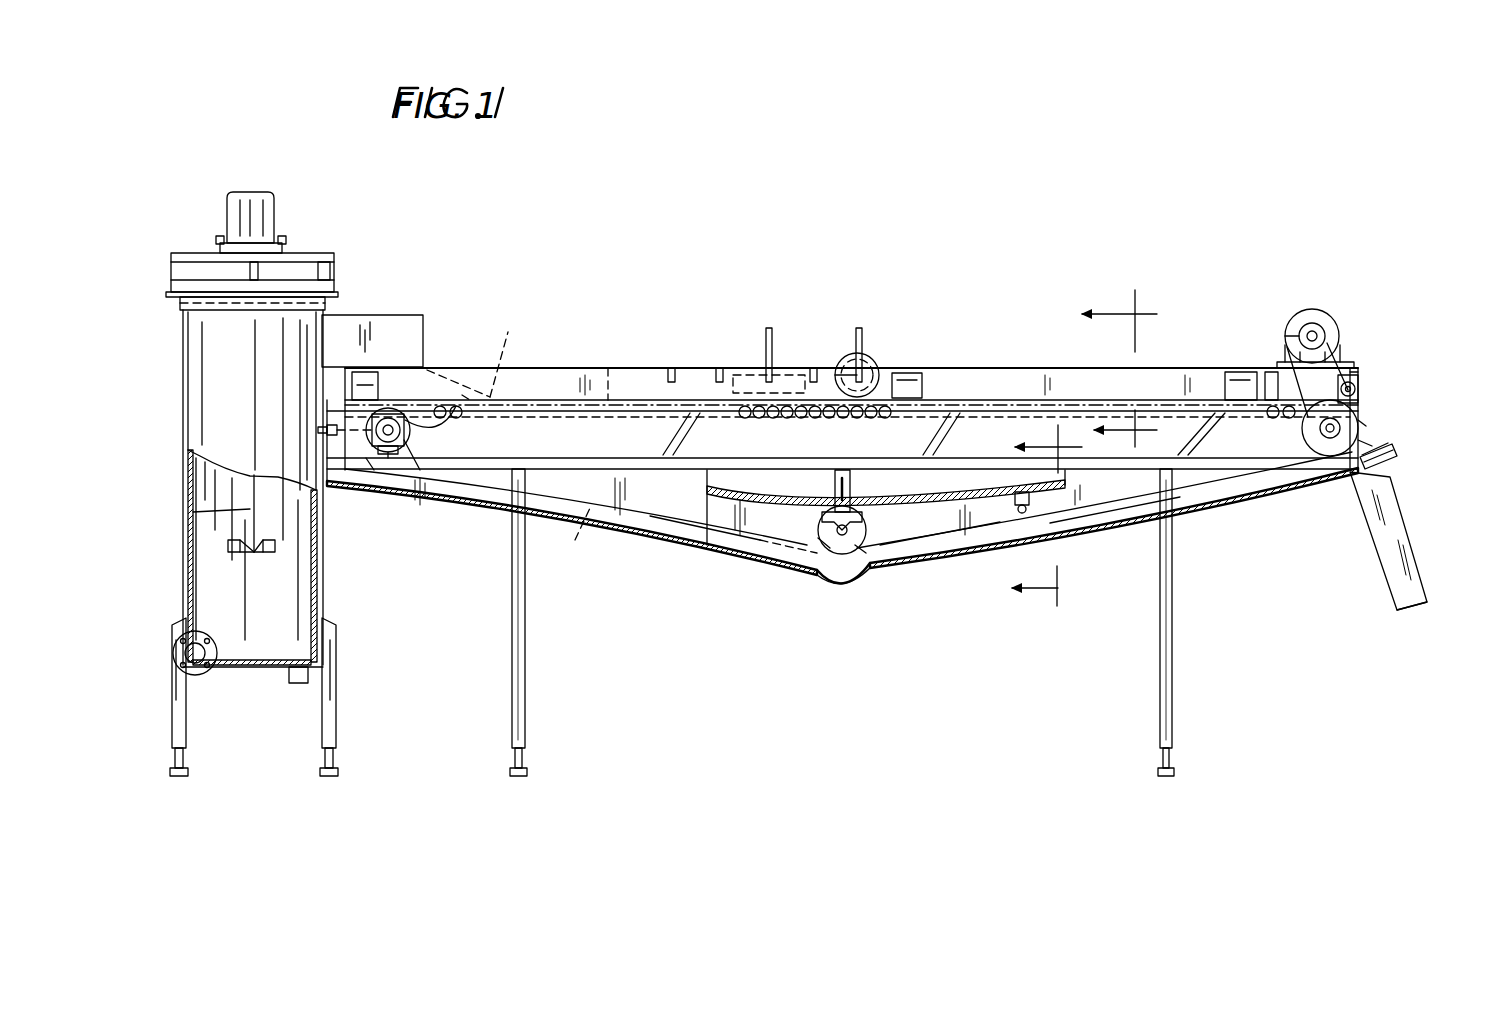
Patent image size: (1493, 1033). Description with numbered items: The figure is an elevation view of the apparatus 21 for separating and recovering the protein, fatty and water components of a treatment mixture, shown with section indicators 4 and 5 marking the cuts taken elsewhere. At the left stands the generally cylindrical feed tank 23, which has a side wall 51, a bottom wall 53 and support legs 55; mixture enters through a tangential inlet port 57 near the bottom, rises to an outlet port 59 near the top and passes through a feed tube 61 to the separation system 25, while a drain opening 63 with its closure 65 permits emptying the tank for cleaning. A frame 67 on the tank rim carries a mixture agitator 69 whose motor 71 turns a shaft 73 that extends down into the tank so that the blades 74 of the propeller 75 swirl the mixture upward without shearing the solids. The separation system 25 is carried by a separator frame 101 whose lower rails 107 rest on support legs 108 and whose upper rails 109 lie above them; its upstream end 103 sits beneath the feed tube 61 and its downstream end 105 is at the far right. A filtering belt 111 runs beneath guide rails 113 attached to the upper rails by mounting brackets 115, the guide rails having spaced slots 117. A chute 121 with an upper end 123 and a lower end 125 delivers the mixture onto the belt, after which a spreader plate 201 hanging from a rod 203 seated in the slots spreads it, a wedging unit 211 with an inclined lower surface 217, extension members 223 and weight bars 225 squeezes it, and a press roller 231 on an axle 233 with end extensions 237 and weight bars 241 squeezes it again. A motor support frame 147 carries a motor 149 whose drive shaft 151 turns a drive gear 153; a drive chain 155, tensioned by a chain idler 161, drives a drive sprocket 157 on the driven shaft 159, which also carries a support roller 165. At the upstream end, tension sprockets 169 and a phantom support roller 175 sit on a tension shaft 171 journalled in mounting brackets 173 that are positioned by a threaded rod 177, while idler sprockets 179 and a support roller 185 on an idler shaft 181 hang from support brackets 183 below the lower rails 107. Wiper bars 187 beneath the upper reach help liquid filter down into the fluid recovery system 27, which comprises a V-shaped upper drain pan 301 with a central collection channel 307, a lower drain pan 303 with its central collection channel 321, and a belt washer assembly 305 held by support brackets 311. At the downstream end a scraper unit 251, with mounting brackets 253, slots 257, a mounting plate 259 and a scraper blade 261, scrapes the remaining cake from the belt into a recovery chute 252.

The apparatus 21 is at (740, 205).
The feed tank 23 is at (183, 330).
The separation system 25 is at (1052, 340).
The fluid recovery system 27 is at (757, 577).
The side wall 51 is at (186, 482).
The bottom wall 53 is at (260, 668).
The support legs 55 is at (337, 715).
The inlet port 57 is at (200, 674).
The outlet port 59 is at (330, 337).
The feed tube 61 is at (383, 383).
The drain opening 63 is at (282, 668).
The closure 65 is at (299, 684).
The frame 67 is at (312, 253).
The mixture agitator 69 is at (276, 215).
The motor 71 is at (249, 192).
The shaft 73 is at (193, 512).
The blades 74 is at (228, 547).
The propeller 75 is at (250, 553).
The separator frame 101 is at (566, 402).
The upstream end 103 is at (335, 470).
The downstream end 105 is at (1360, 402).
The lower rails 107 is at (602, 520).
The support legs 108 is at (526, 727).
The upper rails 109 is at (1003, 368).
The filtering belt 111 is at (610, 368).
The guide rails 113 is at (540, 368).
The mounting brackets 115 is at (428, 368).
The slots 117 is at (719, 368).
The chute 121 is at (463, 398).
The upper end 123 is at (433, 367).
The lower end 125 is at (519, 347).
The motor support frame 147 is at (1350, 382).
The motor 149 is at (1322, 323).
The drive shaft 151 is at (1290, 362).
The drive gear 153 is at (1310, 309).
The drive chain 155 is at (1300, 400).
The drive sprocket 157 is at (1302, 455).
The driven shaft 159 is at (1334, 457).
The chain idler 161 is at (1359, 372).
The support roller 165 is at (1364, 418).
The tension sprockets 169 is at (432, 470).
The tension shaft 171 is at (405, 448).
The mounting brackets 173 is at (420, 470).
The support roller 175 is at (385, 450).
The threaded rod 177 is at (372, 470).
The idler sprockets 179 is at (852, 514).
The idler shaft 181 is at (850, 556).
The support brackets 183 is at (862, 496).
The support roller 185 is at (823, 538).
The wiper bars 187 is at (871, 418).
The spreader plate 201 is at (693, 400).
The rod 203 is at (670, 368).
The wedging unit 211 is at (788, 362).
The inclined lower surface 217 is at (747, 418).
The extension members 223 is at (858, 326).
The weight bars 225 is at (768, 326).
The press roller 231 is at (878, 362).
The axle 233 is at (921, 373).
The end extensions 237 is at (838, 372).
The weight bars 241 is at (873, 355).
The scraper unit 251 is at (1405, 482).
The recovery chute 252 is at (1412, 612).
The mounting brackets 253 is at (1397, 450).
The slots 257 is at (1396, 460).
The mounting plate 259 is at (1390, 446).
The scraper blade 261 is at (1374, 438).
The upper drain pan 301 is at (743, 553).
The lower drain pan 303 is at (920, 555).
The belt washer assembly 305 is at (1035, 527).
The central collection channel 307 is at (915, 548).
The support brackets 311 is at (1029, 505).
The central collection channel 321 is at (822, 588).
The section line 4- 4 is at (1123, 371).
The section line 5- 5 is at (1049, 517).